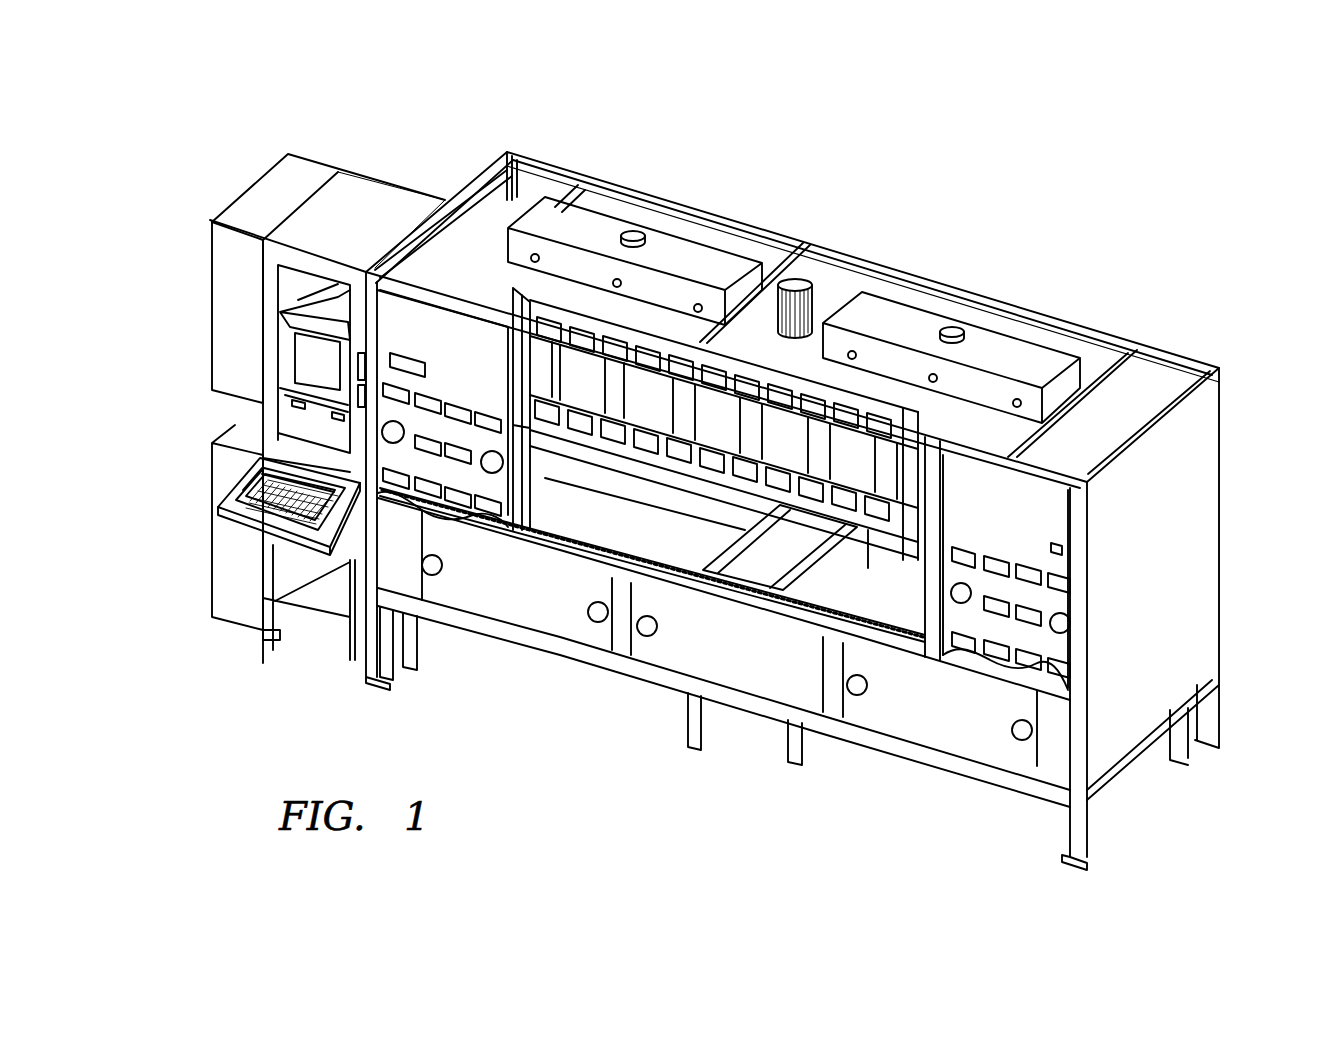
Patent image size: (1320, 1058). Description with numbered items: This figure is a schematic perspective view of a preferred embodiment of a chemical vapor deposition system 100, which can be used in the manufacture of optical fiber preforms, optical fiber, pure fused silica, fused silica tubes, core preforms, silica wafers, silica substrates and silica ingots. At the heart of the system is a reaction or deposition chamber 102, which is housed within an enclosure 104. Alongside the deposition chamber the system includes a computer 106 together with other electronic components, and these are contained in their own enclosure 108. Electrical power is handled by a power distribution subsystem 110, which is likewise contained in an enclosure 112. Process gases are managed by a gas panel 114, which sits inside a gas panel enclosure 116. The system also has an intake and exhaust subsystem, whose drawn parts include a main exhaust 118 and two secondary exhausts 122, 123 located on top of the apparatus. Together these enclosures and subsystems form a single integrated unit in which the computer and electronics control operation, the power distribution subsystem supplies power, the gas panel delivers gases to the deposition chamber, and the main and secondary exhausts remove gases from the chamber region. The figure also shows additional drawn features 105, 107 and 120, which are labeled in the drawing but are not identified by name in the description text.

The chemical vapor deposition system 100 is at (1058, 212).
The deposition chamber 102 is at (1153, 388).
The enclosure for the deposition chamber 104 is at (1223, 449).
The conveyor module 105 is at (652, 397).
The computer 106 is at (380, 200).
The control panel 107 is at (413, 458).
The enclosure for the computer 108 is at (357, 167).
The power distribution subsystem 110 is at (232, 550).
The enclosure for the power distribution subsystem 112 is at (210, 455).
The gas panel 114 is at (227, 310).
The gas panel enclosure 116 is at (210, 270).
The main exhaust 118 is at (825, 275).
The access door 120 is at (432, 520).
The secondary exhaust 122 is at (607, 222).
The secondary exhaust 123 is at (915, 315).